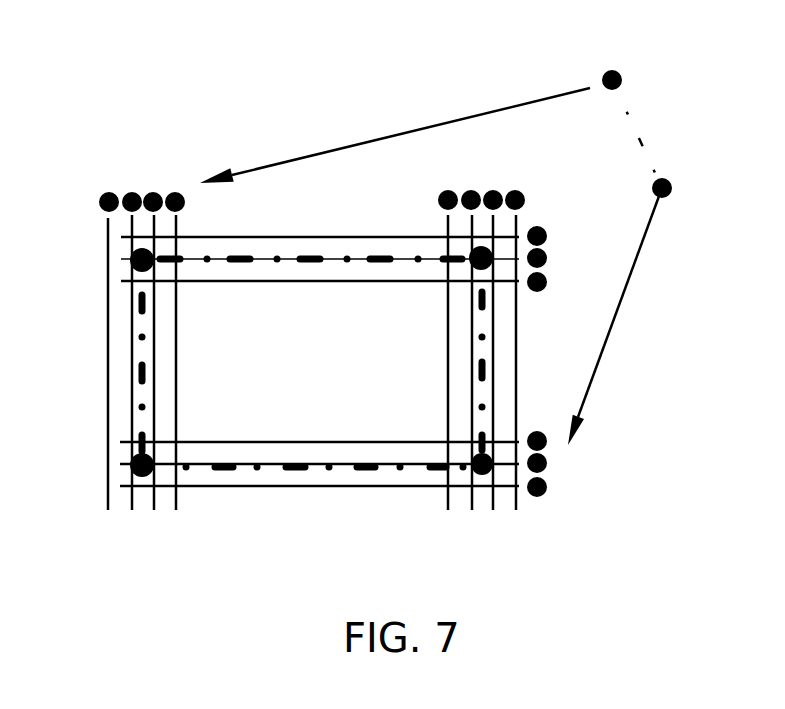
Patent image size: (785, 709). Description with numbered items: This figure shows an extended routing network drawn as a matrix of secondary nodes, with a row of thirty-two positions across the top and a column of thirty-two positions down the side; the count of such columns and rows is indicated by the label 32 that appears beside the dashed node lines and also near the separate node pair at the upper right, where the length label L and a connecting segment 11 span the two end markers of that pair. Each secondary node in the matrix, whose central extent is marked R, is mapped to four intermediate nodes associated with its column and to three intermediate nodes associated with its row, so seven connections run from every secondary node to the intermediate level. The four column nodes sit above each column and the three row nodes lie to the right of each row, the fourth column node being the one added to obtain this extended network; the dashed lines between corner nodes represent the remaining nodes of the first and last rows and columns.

The line segment connecting mark points 11 is at (621, 96).
The conductor trace 32 is at (425, 276).
The length between mark points L is at (610, 162).
The region R is at (304, 376).